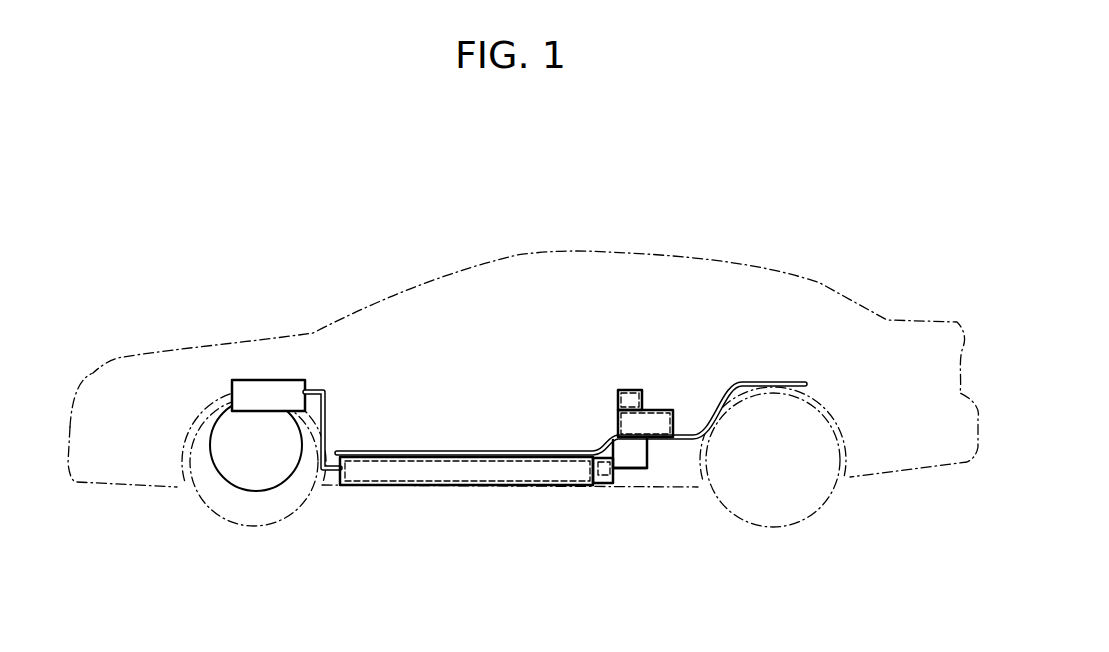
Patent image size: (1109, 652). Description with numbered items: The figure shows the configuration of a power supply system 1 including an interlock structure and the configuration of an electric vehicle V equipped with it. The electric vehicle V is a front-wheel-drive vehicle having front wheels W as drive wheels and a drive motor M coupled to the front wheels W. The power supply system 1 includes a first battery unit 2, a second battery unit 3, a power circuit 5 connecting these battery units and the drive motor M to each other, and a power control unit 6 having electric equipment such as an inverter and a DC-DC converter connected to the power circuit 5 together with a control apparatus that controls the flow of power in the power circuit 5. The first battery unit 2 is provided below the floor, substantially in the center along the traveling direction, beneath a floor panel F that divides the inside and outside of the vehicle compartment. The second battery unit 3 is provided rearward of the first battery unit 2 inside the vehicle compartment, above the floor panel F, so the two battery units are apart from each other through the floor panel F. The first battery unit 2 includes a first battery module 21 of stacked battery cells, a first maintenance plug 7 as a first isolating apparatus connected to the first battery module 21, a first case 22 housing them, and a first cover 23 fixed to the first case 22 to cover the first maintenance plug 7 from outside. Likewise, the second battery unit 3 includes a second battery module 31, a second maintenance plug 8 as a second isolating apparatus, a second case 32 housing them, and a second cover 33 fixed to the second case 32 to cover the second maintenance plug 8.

The electric vehicle V is at (757, 193).
The power supply system 1 is at (308, 332).
The first battery unit 2 is at (488, 432).
The second battery unit 3 is at (604, 380).
The power circuit 5 is at (640, 470).
The power control unit 6 is at (248, 390).
The first maintenance plug 7 is at (608, 486).
The second maintenance plug 8 is at (633, 390).
The first battery module 21 is at (387, 470).
The first case 22 is at (452, 486).
The first cover 23 is at (598, 484).
The second battery module 31 is at (662, 408).
The second case 32 is at (670, 436).
The second cover 33 is at (627, 390).
The floor panel F is at (775, 383).
The drive motor M is at (242, 480).
The front wheels W is at (297, 503).